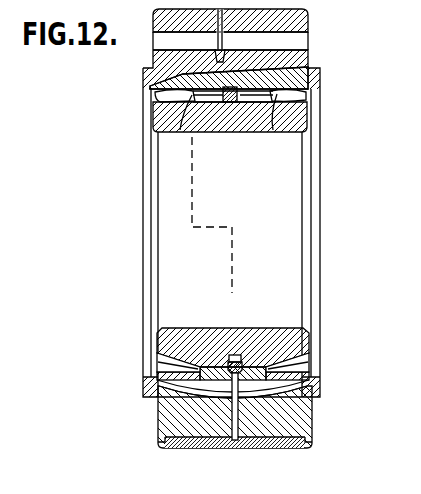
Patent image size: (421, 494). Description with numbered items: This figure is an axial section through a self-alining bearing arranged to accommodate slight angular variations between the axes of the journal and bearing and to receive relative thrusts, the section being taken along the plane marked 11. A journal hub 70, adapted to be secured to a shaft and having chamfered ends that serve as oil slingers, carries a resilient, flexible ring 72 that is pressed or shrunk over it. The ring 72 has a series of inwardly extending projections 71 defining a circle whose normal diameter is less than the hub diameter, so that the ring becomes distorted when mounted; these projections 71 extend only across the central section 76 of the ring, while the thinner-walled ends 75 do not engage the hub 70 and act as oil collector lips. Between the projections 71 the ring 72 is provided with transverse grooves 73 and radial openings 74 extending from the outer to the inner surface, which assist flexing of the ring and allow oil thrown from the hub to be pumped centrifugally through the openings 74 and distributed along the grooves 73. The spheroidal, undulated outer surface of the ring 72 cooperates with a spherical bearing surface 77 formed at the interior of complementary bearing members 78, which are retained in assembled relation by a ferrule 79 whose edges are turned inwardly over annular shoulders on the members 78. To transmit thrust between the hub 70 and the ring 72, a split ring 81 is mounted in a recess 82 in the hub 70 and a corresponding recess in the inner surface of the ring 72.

The section line 11 is at (157, 42).
The journal hub 70 is at (277, 133).
The inwardly extending projections 71 is at (185, 132).
The resilient, flexible ring 72 is at (255, 74).
The transverse grooves 73 is at (218, 395).
The radial openings 74 is at (160, 362).
The ends of the ring 75 is at (158, 95).
The central section of the ring 76 is at (208, 95).
The spherical bearing surface 77 is at (305, 364).
The complementary bearing members 78 is at (162, 417).
The ferrule 79 is at (285, 448).
The split ring 81 is at (235, 355).
The recess 82 is at (237, 102).